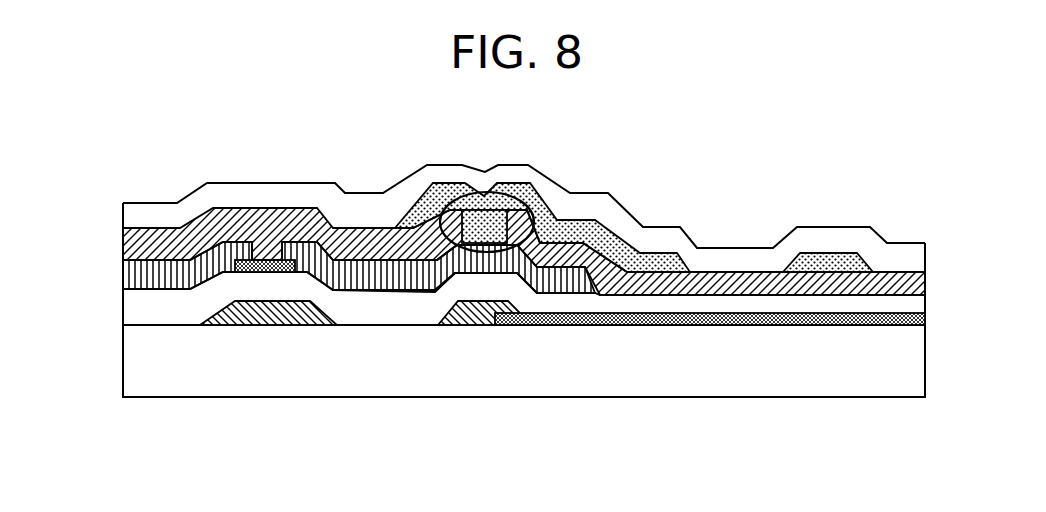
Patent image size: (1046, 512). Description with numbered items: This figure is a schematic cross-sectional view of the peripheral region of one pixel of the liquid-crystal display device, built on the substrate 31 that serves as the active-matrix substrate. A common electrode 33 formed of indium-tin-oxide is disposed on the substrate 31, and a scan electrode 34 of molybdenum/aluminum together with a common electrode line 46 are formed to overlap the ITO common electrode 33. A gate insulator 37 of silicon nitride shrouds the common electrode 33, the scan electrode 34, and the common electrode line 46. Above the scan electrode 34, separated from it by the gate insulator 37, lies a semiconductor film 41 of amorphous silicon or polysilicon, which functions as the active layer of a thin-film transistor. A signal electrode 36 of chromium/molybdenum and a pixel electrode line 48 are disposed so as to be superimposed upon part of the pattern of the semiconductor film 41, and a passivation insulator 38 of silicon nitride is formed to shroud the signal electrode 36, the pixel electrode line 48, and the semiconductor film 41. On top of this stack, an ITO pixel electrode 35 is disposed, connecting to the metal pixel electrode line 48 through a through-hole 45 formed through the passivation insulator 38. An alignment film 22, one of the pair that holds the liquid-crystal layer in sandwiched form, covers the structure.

The alignment film 22 is at (278, 193).
The substrate 31 is at (670, 372).
The common electrode 33 is at (820, 325).
The scan electrode 34 is at (250, 313).
The ITO pixel electrode 35 is at (820, 252).
The signal electrode 36 is at (147, 275).
The gate insulator 37 is at (145, 308).
The passivation insulator 38 is at (147, 242).
The semiconductor film 41 is at (270, 275).
The through-hole 45 is at (517, 210).
The common electrode line 46 is at (470, 315).
The pixel electrode line 48 is at (373, 273).